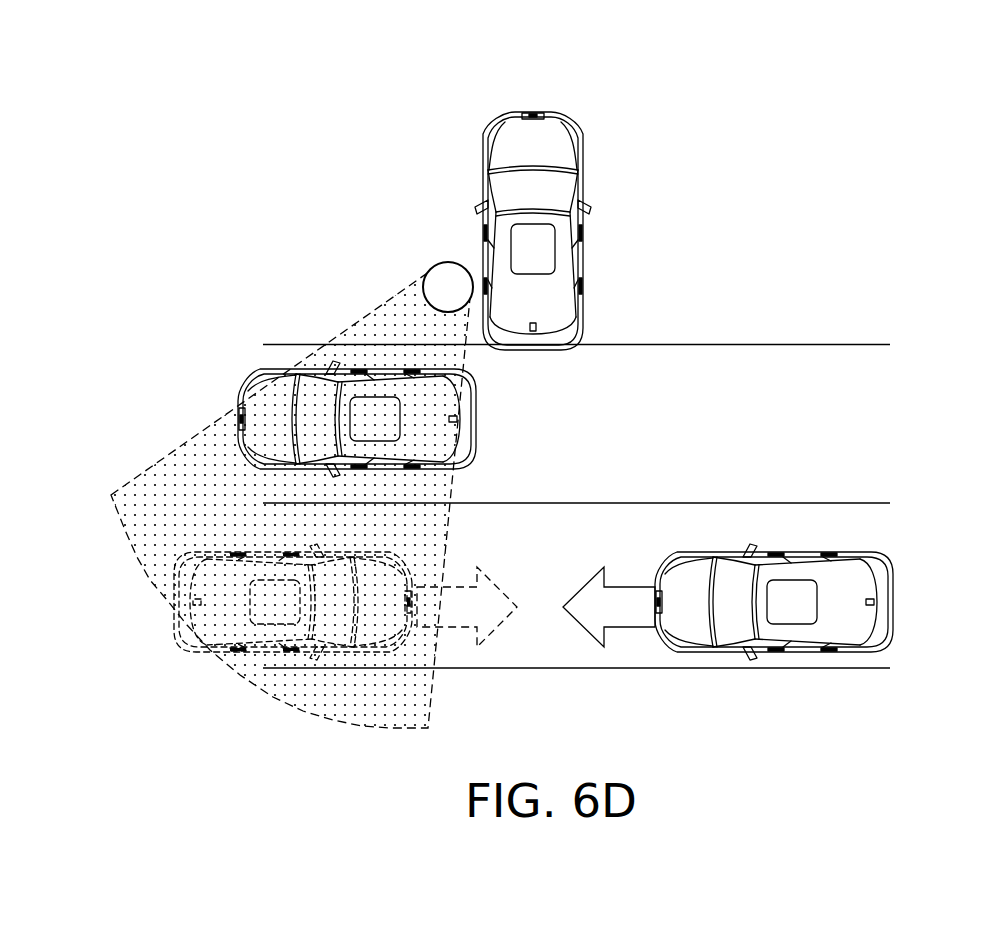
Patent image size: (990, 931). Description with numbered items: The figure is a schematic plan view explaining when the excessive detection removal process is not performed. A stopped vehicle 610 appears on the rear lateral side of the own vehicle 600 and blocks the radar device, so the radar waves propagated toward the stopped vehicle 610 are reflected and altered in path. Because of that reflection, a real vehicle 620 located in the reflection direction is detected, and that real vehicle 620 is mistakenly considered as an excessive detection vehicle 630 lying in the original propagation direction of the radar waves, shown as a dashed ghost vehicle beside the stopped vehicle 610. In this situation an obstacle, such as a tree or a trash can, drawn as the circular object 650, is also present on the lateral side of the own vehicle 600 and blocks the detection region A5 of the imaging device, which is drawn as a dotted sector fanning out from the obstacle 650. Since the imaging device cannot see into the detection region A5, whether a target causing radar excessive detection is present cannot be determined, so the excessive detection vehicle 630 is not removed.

The own vehicle 600 is at (560, 113).
The stopped vehicle 610 is at (302, 372).
The real vehicle 620 is at (880, 553).
The excessive detection vehicle 630 is at (303, 553).
The sensor 650 is at (438, 262).
The detection region A5 is at (212, 470).